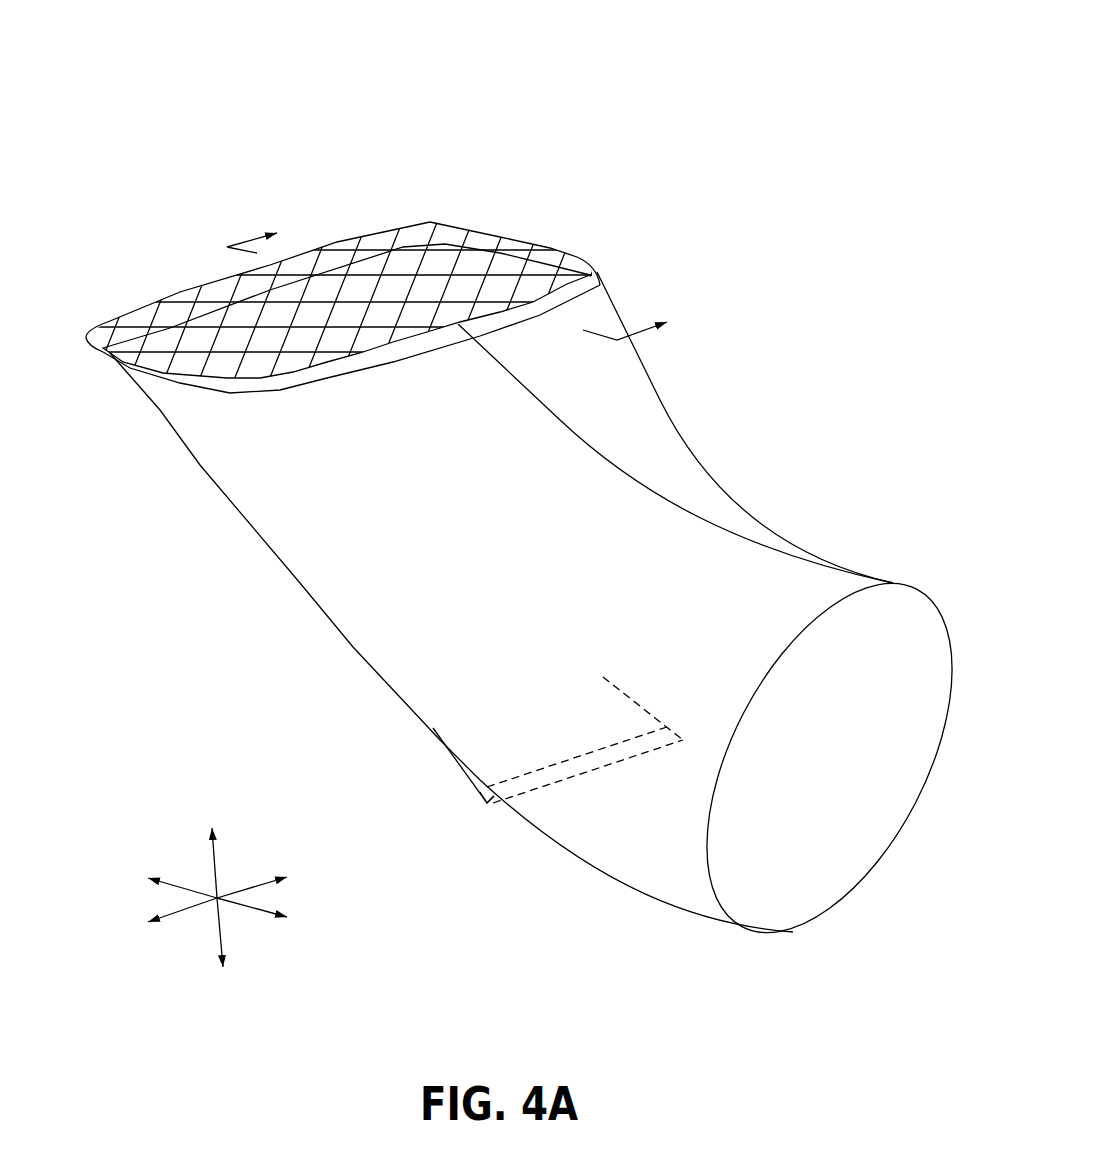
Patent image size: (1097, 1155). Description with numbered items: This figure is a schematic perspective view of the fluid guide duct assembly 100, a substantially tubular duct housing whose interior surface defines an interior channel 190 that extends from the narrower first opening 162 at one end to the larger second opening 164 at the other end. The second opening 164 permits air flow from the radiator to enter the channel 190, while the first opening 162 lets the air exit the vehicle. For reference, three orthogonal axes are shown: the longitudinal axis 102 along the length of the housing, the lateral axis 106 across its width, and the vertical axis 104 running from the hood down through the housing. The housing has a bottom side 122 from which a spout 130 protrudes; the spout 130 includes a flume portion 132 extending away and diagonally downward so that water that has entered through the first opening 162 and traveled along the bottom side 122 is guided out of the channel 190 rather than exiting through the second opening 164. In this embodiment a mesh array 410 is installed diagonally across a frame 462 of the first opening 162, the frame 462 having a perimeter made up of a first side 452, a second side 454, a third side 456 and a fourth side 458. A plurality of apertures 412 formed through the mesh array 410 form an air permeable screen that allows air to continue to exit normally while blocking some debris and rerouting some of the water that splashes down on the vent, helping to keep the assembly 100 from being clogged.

The assembly 100 is at (692, 107).
The longitudinal axis 102 is at (248, 905).
The vertical axis 104 is at (208, 868).
The lateral axis 106 is at (250, 885).
The bottom side 122 is at (203, 516).
The spout 130 is at (443, 780).
The flume portion 132 is at (482, 797).
The first opening 162 is at (184, 283).
The second opening 164 is at (890, 620).
The interior channel 190 is at (847, 765).
The mesh array 410 is at (455, 268).
The apertures 412 is at (368, 297).
The first side 452 is at (433, 337).
The second side 454 is at (177, 330).
The third side 456 is at (223, 283).
The fourth side 458 is at (533, 245).
The frame 462 is at (73, 333).